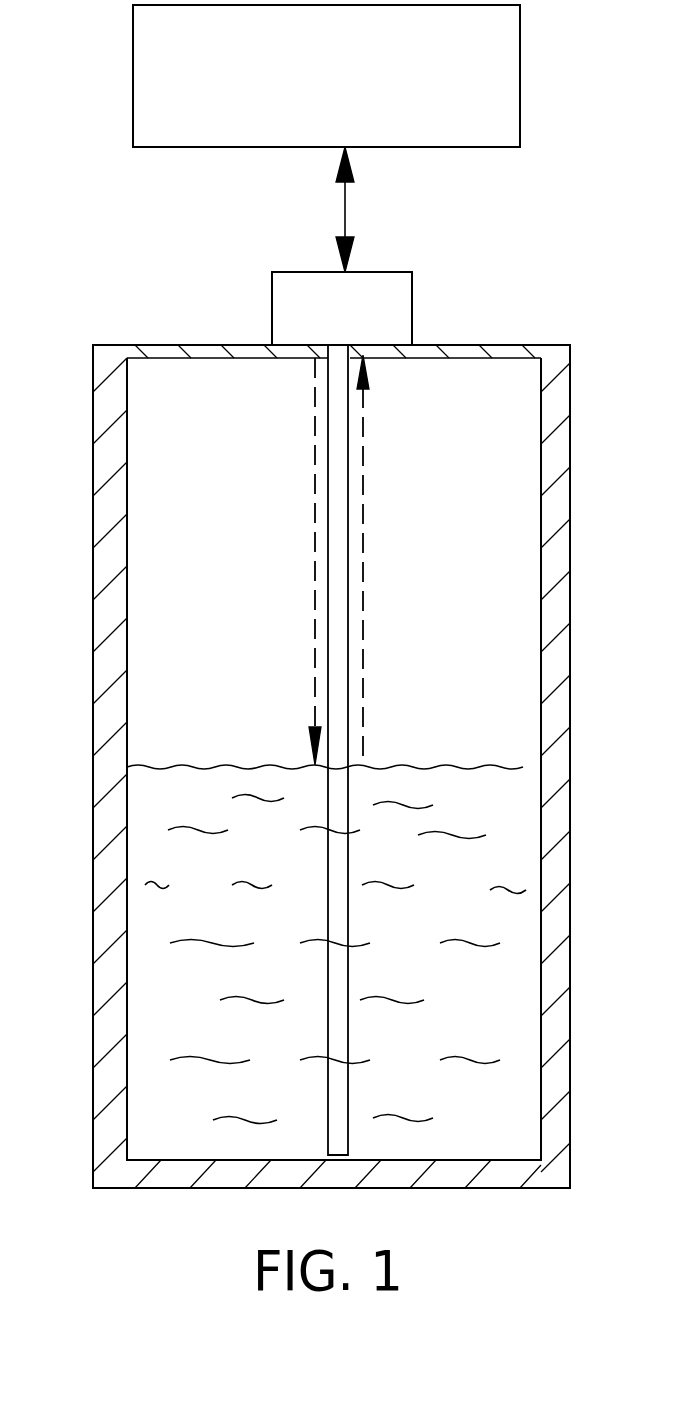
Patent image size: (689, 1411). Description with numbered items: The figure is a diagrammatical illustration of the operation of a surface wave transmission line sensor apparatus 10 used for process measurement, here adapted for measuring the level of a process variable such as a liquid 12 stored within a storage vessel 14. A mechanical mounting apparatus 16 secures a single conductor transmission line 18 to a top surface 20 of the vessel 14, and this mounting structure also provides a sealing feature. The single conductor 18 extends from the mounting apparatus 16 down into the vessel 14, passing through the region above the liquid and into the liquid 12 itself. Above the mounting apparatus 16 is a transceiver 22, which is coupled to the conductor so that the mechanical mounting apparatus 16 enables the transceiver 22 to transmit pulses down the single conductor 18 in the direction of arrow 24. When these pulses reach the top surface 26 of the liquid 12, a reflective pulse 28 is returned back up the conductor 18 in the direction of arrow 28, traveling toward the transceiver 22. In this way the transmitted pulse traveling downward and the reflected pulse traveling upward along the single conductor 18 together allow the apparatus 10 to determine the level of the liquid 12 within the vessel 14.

The apparatus 10 is at (376, 246).
The liquid 12 is at (152, 953).
The storage vessel 14 is at (102, 633).
The mechanical mounting apparatus 16 is at (300, 287).
The single conductor transmission line 18 is at (333, 565).
The top surface 20 is at (473, 353).
The transceiver 22 is at (493, 117).
The arrow 24 is at (315, 495).
The top surface of liquid 26 is at (393, 768).
The reflective pulse 28 is at (365, 516).